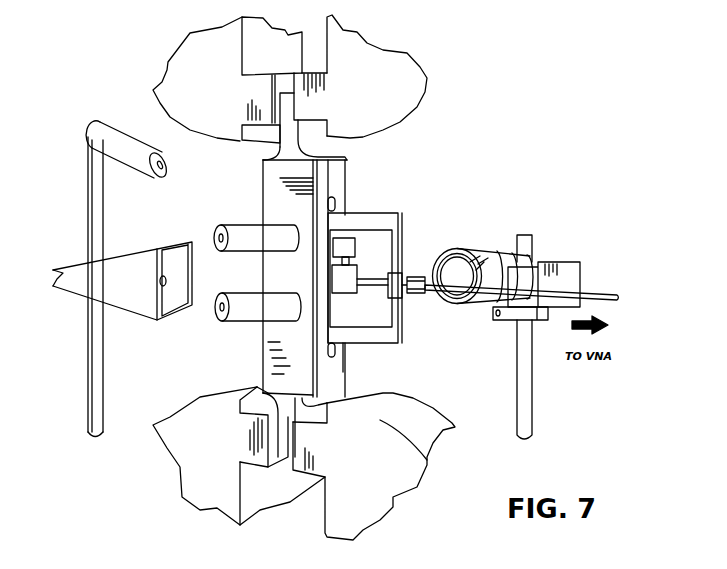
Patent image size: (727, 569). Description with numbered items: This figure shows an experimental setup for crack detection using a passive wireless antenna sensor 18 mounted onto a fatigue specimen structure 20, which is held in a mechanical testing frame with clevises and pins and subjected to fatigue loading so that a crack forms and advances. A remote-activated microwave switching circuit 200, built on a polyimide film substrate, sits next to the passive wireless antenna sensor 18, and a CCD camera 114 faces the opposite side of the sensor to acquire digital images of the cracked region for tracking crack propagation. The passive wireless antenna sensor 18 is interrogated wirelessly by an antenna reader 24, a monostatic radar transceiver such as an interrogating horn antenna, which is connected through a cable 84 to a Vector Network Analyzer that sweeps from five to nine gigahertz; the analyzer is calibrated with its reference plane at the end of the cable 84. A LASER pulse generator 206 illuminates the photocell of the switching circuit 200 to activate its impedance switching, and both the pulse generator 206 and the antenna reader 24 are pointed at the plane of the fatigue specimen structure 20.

The LASER pulse generator 206 is at (127, 133).
The antenna reader 24 is at (122, 308).
The fatigue specimen structure 20 is at (372, 213).
The remote-activated microwave switching circuit 200 is at (355, 250).
The passive wireless antenna sensor 18 is at (343, 293).
The charge-coupled device (CCD) camera 114 is at (487, 248).
The cable 84 is at (597, 291).